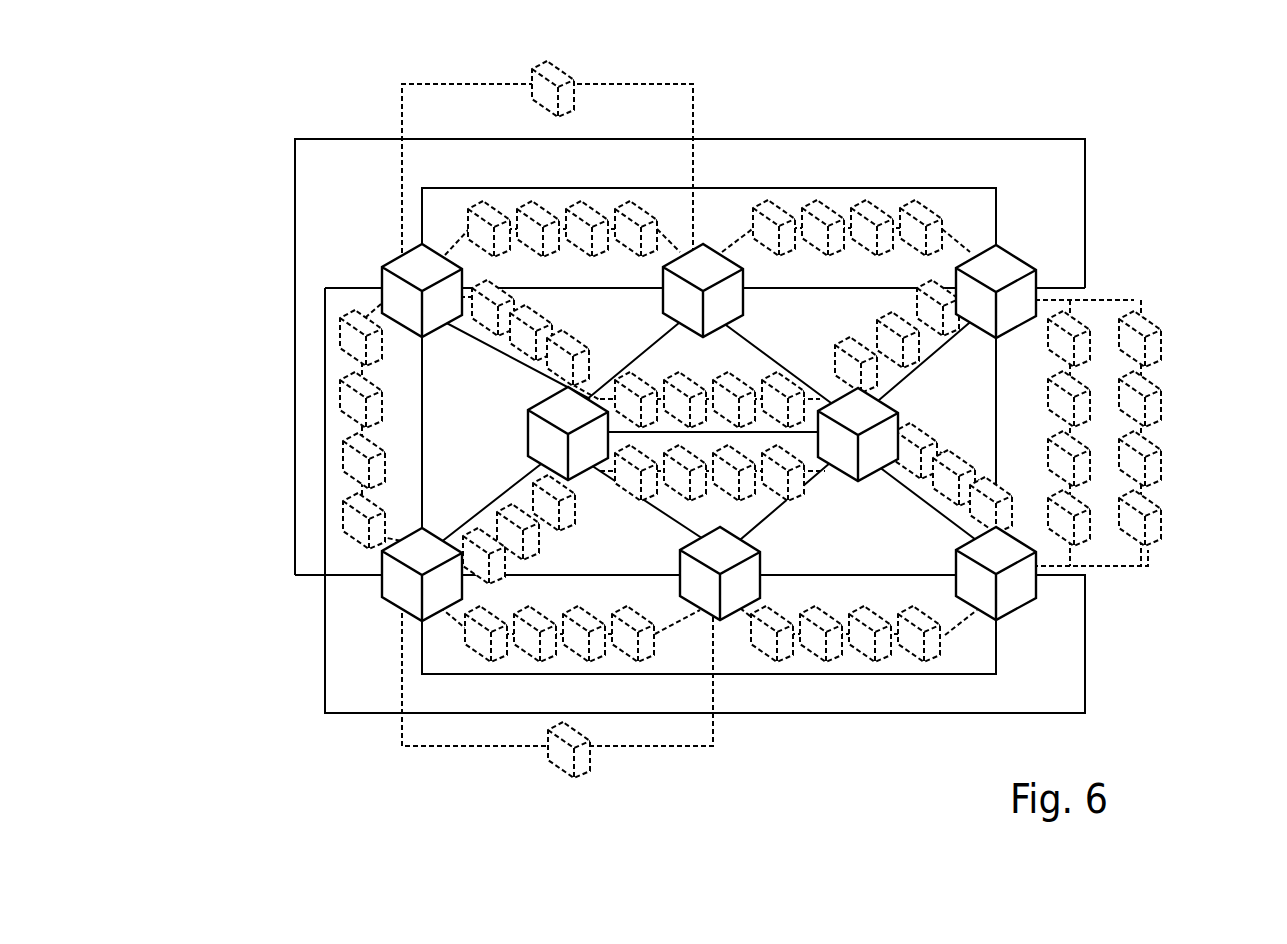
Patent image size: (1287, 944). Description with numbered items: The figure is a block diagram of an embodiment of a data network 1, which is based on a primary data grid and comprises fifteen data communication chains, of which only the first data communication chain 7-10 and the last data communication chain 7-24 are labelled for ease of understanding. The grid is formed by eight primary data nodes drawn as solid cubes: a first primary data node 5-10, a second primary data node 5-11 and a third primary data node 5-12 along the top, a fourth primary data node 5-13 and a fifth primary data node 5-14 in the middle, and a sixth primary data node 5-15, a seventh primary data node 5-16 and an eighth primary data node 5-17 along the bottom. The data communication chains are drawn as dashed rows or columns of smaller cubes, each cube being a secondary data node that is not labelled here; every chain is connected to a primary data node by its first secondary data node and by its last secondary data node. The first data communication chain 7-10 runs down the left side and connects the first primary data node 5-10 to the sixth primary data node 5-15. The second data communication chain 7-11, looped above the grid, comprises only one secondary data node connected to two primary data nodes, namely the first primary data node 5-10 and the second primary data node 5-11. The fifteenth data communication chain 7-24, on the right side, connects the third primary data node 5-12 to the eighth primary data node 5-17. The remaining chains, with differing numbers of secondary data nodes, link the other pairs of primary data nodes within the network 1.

The data network 1 is at (240, 616).
The first primary data node 5-10 is at (397, 260).
The second primary data node 5-11 is at (705, 243).
The third primary data node 5-12 is at (980, 252).
The fourth primary data node 5-13 is at (530, 443).
The fifth primary data node 5-14 is at (895, 410).
The sixth primary data node 5-15 is at (402, 605).
The seventh primary data node 5-16 is at (700, 597).
The eighth primary data node 5-17 is at (975, 607).
The first data communication chain 7-10 is at (360, 365).
The second data communication chain 7-11 is at (455, 83).
The fifteenth data communication chain 7-24 is at (1128, 298).